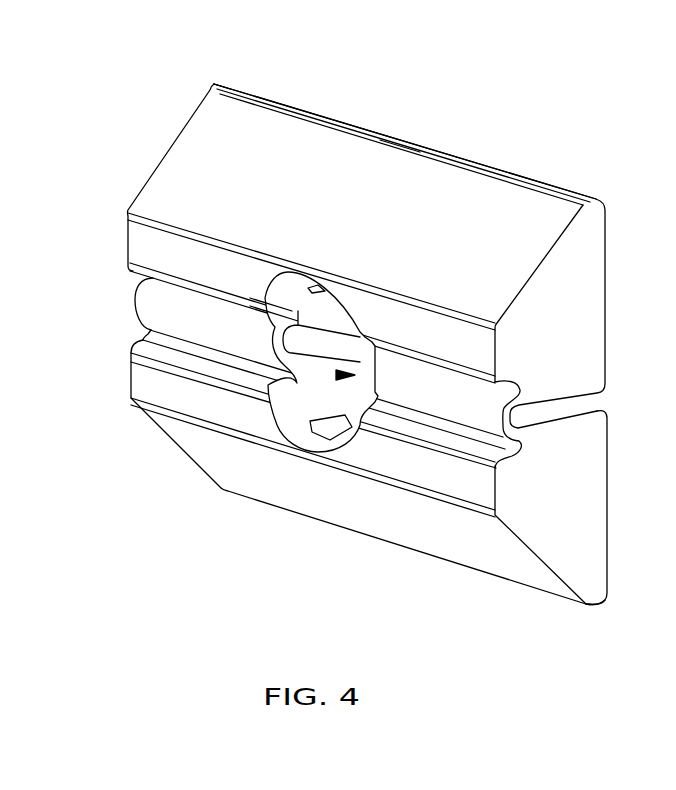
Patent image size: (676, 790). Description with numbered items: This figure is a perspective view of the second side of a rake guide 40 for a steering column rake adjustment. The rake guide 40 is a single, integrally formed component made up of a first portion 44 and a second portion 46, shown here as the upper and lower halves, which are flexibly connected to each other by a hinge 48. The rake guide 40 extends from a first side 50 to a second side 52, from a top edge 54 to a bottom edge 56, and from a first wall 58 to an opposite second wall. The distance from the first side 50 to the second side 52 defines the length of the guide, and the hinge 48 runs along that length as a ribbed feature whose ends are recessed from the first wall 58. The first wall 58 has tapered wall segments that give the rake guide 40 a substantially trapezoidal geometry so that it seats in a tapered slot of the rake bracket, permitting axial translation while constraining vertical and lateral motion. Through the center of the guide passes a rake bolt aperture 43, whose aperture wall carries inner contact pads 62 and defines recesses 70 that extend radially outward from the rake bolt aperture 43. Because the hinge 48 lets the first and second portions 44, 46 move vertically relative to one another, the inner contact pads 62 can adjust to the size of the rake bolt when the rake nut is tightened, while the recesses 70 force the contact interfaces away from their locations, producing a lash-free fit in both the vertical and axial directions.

The first rake guide 40 is at (363, 110).
The rake bolt aperture 43 is at (338, 375).
The first portion 44 is at (349, 260).
The second portion 46 is at (369, 491).
The hinge 48 is at (150, 313).
The first side 50 is at (580, 588).
The second side 52 is at (145, 185).
The top edge 54 is at (270, 100).
The bottom edge 56 is at (368, 533).
The first wall 58 is at (408, 163).
The inner contact pad 62 is at (314, 386).
The recess 70 is at (324, 433).